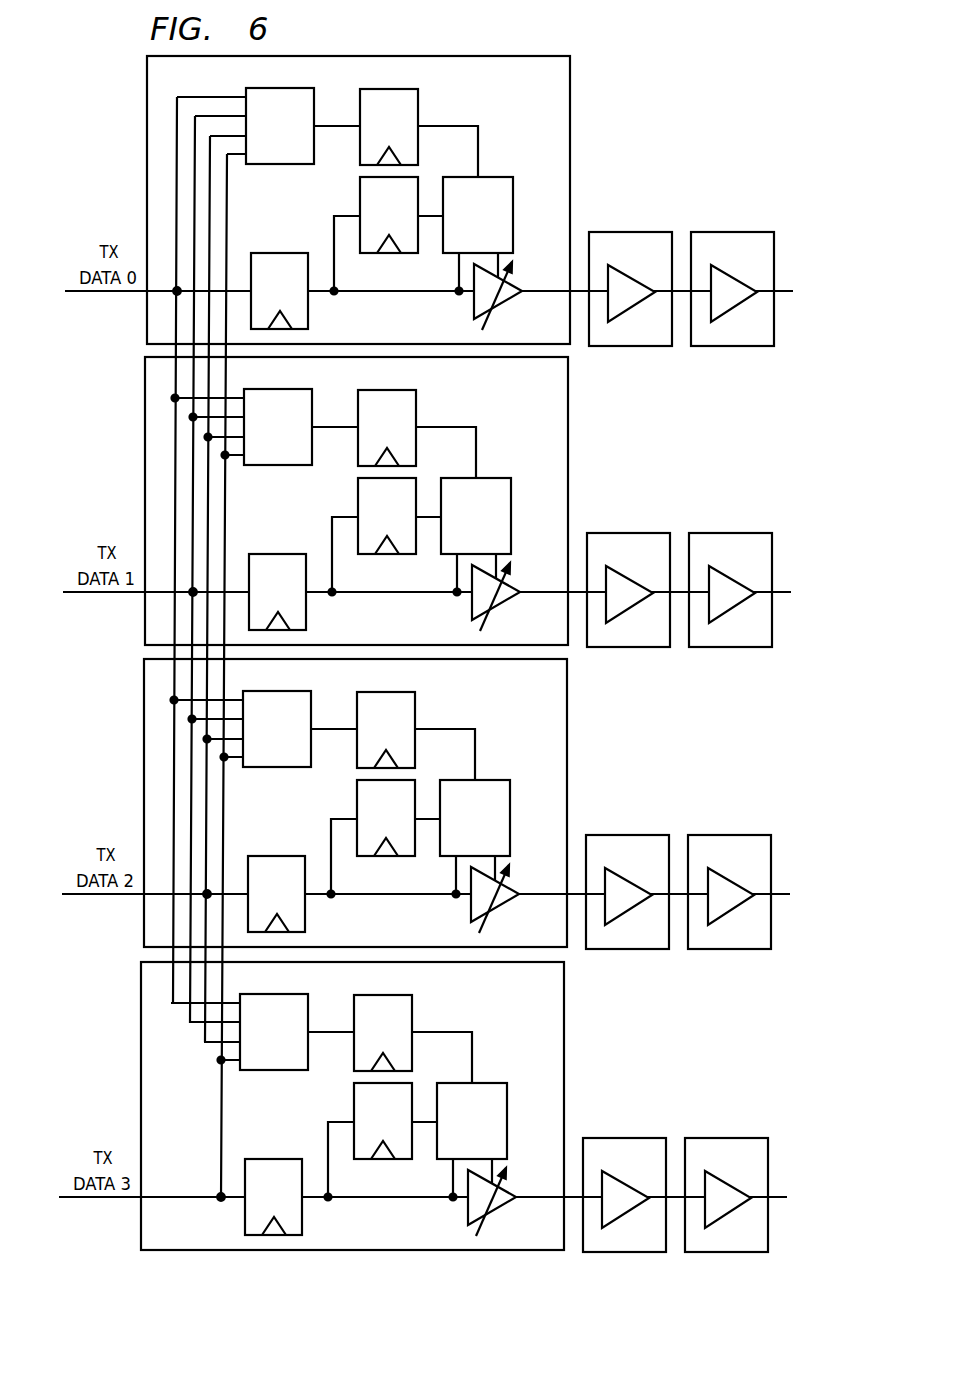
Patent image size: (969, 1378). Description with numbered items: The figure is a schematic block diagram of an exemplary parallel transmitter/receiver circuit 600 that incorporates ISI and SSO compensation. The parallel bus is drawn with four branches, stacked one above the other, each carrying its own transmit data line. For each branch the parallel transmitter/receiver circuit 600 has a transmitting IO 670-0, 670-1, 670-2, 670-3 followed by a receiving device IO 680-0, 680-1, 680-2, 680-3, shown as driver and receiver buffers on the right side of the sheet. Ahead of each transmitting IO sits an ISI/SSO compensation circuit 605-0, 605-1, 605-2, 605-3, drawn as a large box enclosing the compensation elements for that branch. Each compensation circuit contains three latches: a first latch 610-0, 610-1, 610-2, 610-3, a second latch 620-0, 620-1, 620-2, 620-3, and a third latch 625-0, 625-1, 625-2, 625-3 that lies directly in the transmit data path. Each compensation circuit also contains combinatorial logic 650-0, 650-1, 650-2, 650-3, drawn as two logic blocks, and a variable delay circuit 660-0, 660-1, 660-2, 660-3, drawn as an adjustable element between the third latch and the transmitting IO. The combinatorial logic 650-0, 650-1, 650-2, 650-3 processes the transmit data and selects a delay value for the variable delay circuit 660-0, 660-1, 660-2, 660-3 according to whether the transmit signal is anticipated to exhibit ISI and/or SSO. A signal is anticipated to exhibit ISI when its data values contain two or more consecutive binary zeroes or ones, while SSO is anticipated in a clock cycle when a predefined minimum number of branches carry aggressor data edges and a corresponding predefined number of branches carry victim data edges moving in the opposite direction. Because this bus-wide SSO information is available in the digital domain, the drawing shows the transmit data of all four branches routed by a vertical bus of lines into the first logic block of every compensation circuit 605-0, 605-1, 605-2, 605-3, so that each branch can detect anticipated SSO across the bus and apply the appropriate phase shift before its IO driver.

The parallel transmitter/receiver circuit 600 is at (665, 94).
The ISI/SSO compensation circuit 605-0 is at (147, 90).
The ISI/SSO compensation circuit 605-1 is at (315, 501).
The ISI/SSO compensation circuit 605-2 is at (314, 803).
The ISI/SSO compensation circuit 605-3 is at (311, 1106).
The latch 610-0 is at (420, 98).
The latch 610-1 is at (404, 426).
The latch 610-2 is at (403, 728).
The latch 610-3 is at (400, 1031).
The latch 620-0 is at (360, 196).
The latch 620-1 is at (360, 537).
The latch 620-2 is at (359, 839).
The latch 620-3 is at (356, 1142).
The latch 625-0 is at (280, 253).
The latch 625-1 is at (277, 571).
The latch 625-2 is at (276, 873).
The latch 625-3 is at (273, 1176).
The combinatorial logic 650-0 is at (246, 88).
The combinatorial logic 650-1 is at (360, 479).
The combinatorial logic 650-2 is at (359, 781).
The combinatorial logic 650-3 is at (356, 1084).
The variable delay circuit 660-0 is at (474, 305).
The variable delay circuit 660-1 is at (471, 597).
The variable delay circuit 660-2 is at (470, 899).
The variable delay circuit 660-3 is at (467, 1202).
The transmitting IO 670-0 is at (630, 232).
The transmitting IO 670-1 is at (628, 565).
The transmitting IO 670-2 is at (627, 867).
The transmitting IO 670-3 is at (624, 1170).
The receiving device IO 680-0 is at (733, 232).
The receiving device IO 680-1 is at (730, 565).
The receiving device IO 680-2 is at (729, 867).
The receiving device IO 680-3 is at (726, 1170).